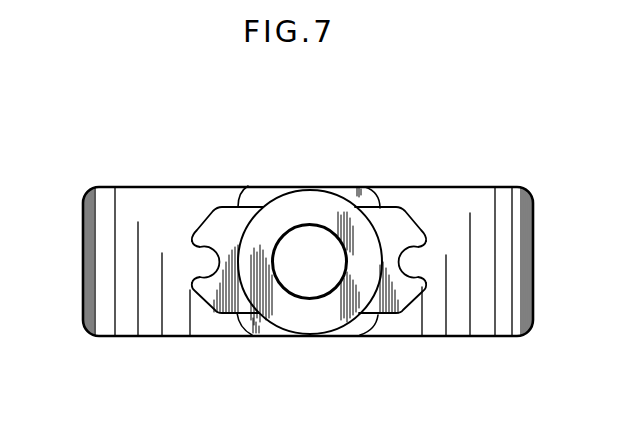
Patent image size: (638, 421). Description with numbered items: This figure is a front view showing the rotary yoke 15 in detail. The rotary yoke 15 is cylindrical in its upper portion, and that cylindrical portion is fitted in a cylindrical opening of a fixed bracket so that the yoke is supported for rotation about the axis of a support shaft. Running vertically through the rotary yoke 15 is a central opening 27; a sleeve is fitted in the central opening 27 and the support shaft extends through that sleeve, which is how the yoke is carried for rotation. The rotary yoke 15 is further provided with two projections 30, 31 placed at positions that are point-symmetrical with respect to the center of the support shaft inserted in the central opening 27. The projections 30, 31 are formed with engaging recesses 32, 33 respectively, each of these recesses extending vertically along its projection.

The rotary yoke 15 is at (112, 142).
The central opening 27 is at (313, 230).
The projection 30 is at (386, 212).
The projection 31 is at (217, 313).
The engaging recess 32 is at (413, 258).
The engaging recess 33 is at (200, 259).